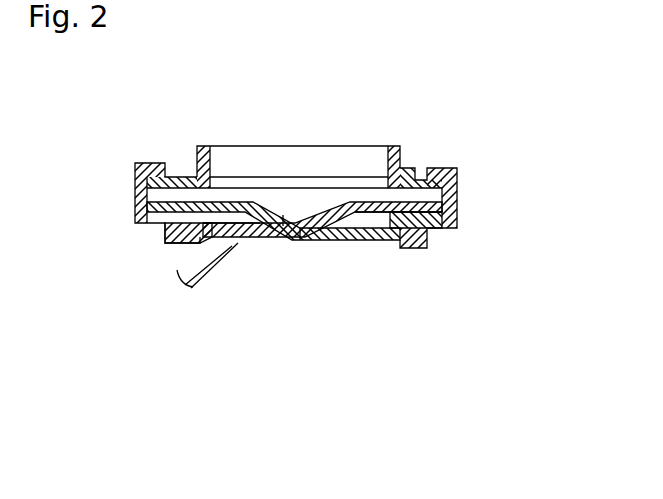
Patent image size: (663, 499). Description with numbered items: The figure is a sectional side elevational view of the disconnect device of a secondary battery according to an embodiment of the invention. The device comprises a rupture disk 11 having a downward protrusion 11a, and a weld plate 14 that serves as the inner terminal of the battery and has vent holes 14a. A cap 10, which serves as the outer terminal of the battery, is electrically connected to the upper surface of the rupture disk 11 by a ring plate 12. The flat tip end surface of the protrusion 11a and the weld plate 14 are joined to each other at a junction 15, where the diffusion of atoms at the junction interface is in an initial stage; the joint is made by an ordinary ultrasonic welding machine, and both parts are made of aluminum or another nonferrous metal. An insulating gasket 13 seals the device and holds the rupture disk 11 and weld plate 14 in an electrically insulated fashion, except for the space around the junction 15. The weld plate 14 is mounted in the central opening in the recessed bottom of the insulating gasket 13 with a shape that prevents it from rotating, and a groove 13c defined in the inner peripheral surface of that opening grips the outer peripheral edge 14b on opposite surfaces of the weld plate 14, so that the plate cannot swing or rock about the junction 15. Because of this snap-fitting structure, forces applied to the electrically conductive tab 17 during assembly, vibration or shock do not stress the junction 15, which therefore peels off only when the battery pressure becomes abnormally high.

The cap 10 is at (400, 157).
The rupture disk 11 is at (373, 240).
The protrusion 11a is at (283, 215).
The ring plate 12 is at (360, 192).
The insulating gasket 13 is at (427, 238).
The groove 13c is at (180, 243).
The weld plate 14 is at (333, 240).
The vent holes 14a is at (248, 247).
The outer peripheral edge 14b is at (403, 250).
The junction 15 is at (291, 247).
The electrically conductive tab 17 is at (203, 292).